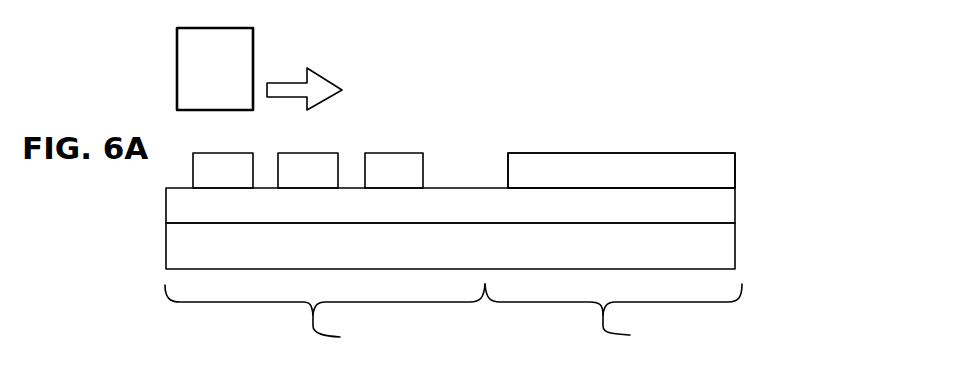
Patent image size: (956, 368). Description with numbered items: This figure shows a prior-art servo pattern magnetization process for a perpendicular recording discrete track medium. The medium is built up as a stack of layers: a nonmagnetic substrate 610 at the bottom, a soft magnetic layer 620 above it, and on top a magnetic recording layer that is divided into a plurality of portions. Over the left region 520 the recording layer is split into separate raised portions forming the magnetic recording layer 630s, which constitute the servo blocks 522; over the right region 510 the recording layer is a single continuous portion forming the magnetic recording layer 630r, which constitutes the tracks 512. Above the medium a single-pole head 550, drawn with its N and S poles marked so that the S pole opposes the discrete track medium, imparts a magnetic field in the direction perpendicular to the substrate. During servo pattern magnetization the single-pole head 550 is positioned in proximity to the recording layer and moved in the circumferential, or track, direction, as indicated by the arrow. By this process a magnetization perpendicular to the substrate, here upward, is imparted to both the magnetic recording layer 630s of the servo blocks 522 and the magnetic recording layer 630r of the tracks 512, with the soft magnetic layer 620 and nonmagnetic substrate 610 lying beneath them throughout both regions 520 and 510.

The single-pole head 550 is at (240, 52).
The magnetic recording layer (servo blocks) 630s is at (328, 167).
The tracks 512 is at (408, 131).
The servo blocks 522 is at (539, 131).
The magnetic recording layer (tracks) 630r is at (725, 173).
The soft magnetic layer 620 is at (725, 203).
The nonmagnetic substrate 610 is at (725, 233).
The segmented region 520 is at (325, 323).
The continuous region 510 is at (613, 324).